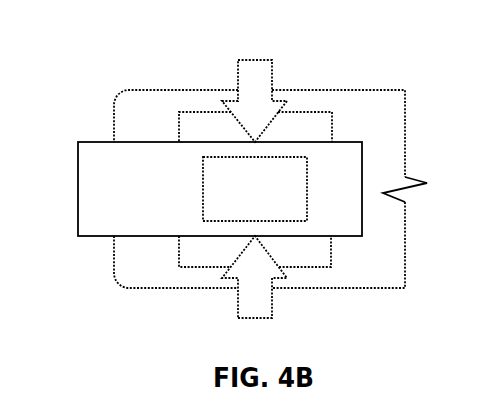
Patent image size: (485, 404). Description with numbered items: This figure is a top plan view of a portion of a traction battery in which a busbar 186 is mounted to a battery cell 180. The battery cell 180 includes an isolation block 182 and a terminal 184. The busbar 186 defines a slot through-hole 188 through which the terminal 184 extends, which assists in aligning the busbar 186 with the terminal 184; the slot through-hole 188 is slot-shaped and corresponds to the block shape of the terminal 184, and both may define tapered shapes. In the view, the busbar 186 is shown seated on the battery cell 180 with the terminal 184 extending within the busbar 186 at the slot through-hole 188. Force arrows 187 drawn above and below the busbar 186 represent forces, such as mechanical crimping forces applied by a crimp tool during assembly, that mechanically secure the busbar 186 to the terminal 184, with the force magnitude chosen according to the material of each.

The battery cell 180 is at (131, 122).
The isolation block 182 is at (211, 124).
The terminal 184 is at (232, 193).
The busbar 186 is at (96, 195).
The force arrows 187 is at (273, 80).
The slot through-hole 188 is at (307, 167).